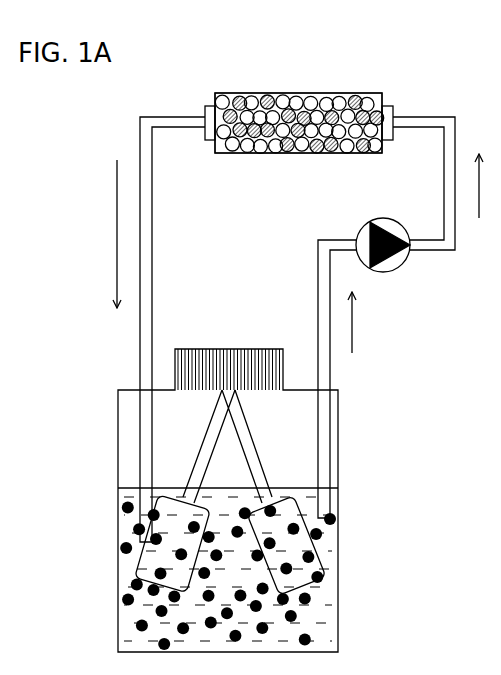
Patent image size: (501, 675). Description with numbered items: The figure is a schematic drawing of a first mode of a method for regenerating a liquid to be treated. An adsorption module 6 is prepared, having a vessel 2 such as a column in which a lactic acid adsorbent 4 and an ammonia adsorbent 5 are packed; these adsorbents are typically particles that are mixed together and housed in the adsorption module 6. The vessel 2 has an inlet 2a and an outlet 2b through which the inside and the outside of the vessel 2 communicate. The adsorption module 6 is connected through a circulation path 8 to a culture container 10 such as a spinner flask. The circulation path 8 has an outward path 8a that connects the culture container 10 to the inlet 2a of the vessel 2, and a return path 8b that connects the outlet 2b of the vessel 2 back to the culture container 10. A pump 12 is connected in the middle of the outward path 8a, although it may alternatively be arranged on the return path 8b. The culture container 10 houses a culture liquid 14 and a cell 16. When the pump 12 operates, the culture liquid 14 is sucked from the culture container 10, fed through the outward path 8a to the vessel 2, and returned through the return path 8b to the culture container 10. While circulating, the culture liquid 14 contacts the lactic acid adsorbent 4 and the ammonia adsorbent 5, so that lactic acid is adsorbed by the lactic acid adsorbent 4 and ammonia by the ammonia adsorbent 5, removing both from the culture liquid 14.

The adsorption module 6 is at (400, 64).
The vessel 2 is at (308, 163).
The inlet 2a is at (393, 115).
The outlet 2b is at (205, 114).
The lactic acid adsorbent 4 is at (313, 98).
The ammonia adsorbent 5 is at (297, 93).
The circulation path 8 is at (297, 329).
The outward path 8a is at (318, 270).
The return path 8b is at (152, 267).
The pump 12 is at (403, 264).
The culture container 10 is at (340, 633).
The culture liquid 14 is at (303, 487).
The cell 16 is at (338, 534).